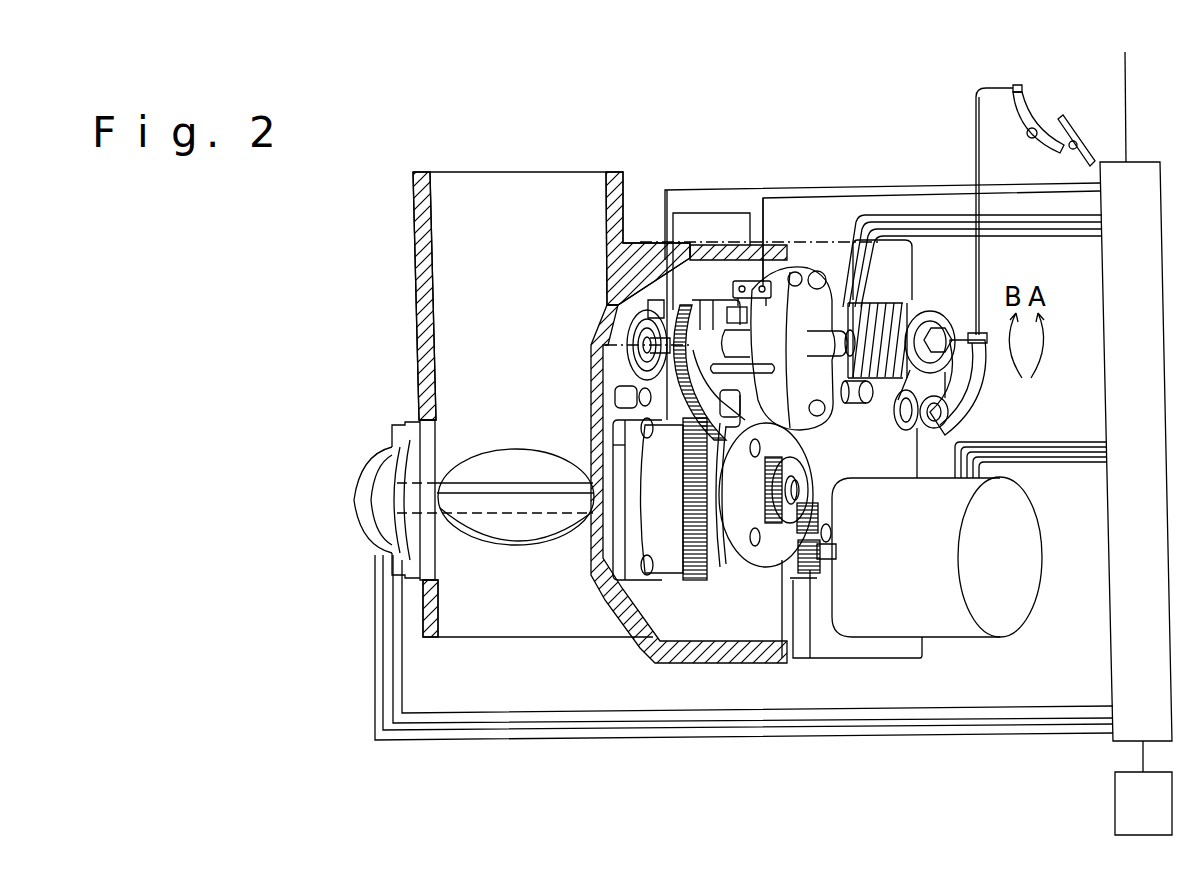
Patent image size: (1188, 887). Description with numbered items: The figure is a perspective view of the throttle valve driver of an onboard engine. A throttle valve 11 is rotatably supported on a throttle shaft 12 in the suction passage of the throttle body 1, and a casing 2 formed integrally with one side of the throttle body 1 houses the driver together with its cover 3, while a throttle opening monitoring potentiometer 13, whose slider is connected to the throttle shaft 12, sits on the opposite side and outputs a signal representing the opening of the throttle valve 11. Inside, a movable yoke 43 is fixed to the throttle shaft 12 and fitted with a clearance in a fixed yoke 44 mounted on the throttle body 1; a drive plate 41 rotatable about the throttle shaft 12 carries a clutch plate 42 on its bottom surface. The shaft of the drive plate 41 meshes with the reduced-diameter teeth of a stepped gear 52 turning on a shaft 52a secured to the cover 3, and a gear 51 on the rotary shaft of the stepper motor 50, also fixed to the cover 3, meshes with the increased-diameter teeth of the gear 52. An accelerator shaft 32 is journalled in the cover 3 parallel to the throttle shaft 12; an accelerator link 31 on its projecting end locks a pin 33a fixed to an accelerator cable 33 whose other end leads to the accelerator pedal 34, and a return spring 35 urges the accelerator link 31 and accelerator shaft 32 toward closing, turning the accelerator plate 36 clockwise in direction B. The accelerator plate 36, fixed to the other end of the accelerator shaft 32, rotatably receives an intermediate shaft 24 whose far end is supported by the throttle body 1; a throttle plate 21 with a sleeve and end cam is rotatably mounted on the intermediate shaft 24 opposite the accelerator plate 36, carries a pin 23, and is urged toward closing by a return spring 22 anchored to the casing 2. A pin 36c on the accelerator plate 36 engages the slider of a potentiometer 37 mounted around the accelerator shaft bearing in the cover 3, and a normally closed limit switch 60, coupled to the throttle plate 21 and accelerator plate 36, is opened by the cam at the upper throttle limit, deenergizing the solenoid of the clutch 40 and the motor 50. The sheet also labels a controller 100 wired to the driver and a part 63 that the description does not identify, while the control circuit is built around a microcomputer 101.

The throttle body 1 is at (422, 283).
The throttle valve 11 is at (496, 534).
The throttle shaft 12 is at (468, 489).
The throttle opening monitoring potentiometer 13 is at (383, 462).
The casing 2 is at (780, 260).
The cover 3 is at (830, 250).
The throttle plate 21 is at (658, 295).
The return spring 22 is at (664, 302).
The pin 23 is at (606, 444).
The intermediate shaft 24 is at (618, 346).
The accelerator link 31 is at (986, 368).
The accelerator shaft 32 is at (866, 296).
The accelerator cable 33 is at (978, 150).
The pin 33a is at (912, 420).
The accelerator pedal 34 is at (1022, 101).
The return spring 35 is at (903, 308).
The accelerator plate 36 is at (686, 305).
The pin 36c is at (792, 430).
The potentiometer 37 is at (853, 262).
The clutch 40 is at (687, 563).
The drive plate 41 is at (768, 552).
The clutch plate 42 is at (736, 550).
The movable yoke 43 is at (690, 556).
The fixed yoke 44 is at (645, 561).
The motor 50 is at (943, 612).
The gear 51 is at (818, 560).
The gear 52 is at (773, 556).
The shaft 52a is at (830, 500).
The limit switch 60 is at (757, 282).
The switch contact 63 is at (732, 290).
The controller 100 is at (1142, 710).
The microcomputer 101 is at (1130, 796).